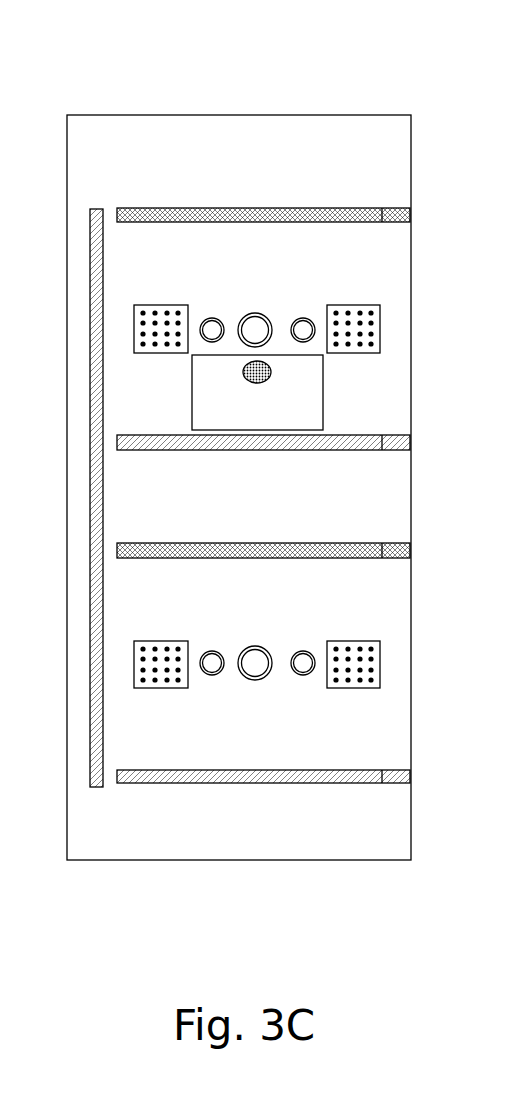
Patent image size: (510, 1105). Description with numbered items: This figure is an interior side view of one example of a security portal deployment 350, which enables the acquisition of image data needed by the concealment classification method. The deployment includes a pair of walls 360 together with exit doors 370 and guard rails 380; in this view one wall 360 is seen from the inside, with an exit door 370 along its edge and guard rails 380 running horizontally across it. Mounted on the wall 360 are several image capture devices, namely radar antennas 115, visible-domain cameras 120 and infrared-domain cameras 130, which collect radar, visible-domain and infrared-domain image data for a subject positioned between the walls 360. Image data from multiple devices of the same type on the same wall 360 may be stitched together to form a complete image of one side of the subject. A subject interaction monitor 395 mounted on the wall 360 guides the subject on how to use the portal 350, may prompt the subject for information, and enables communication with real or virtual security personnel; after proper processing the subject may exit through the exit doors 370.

The security portal deployment 350 is at (239, 48).
The wall 360 is at (266, 189).
The exit door 370 is at (92, 330).
The guard rail 380 is at (153, 210).
The radar antenna 115 is at (160, 328).
The infrared-domain camera 130 is at (212, 328).
The visible-domain camera 120 is at (256, 328).
The subject interaction monitor 395 is at (324, 393).